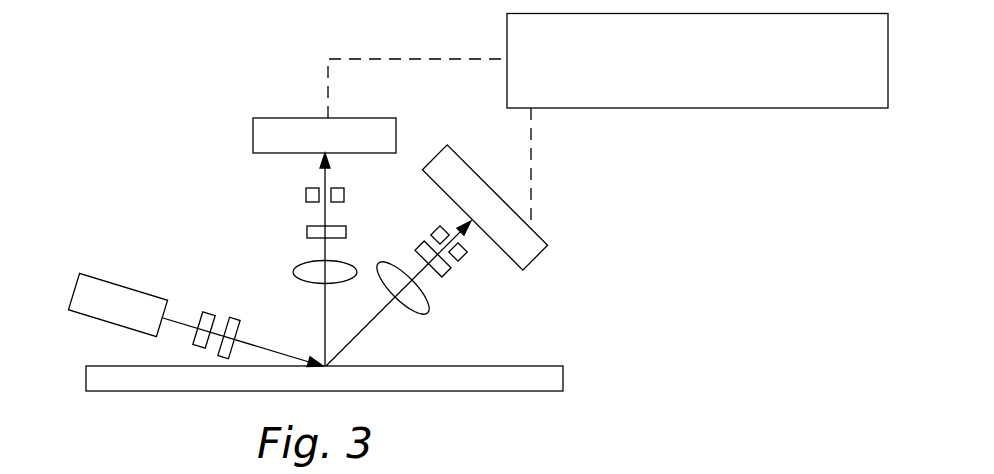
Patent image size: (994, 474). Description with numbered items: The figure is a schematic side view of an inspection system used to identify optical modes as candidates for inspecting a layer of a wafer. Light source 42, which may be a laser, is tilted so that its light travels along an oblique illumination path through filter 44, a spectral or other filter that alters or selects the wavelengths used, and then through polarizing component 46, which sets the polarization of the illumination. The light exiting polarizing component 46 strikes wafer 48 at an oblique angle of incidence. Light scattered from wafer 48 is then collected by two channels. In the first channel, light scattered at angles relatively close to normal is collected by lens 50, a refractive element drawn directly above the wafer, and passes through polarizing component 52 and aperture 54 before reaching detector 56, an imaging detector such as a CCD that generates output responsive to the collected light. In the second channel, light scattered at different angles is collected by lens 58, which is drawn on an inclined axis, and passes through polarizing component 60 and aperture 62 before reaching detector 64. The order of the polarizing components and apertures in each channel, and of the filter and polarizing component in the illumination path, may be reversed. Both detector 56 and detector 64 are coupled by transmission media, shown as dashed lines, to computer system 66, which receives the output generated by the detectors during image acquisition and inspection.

The light source 42 is at (113, 280).
The filter 44 is at (208, 311).
The polarizing component 46 is at (238, 320).
The wafer 48 is at (100, 365).
The lens 50 is at (299, 268).
The polarizing component 52 is at (307, 227).
The aperture 54 is at (306, 192).
The detector 56 is at (252, 138).
The lens 58 is at (423, 312).
The polarizing component 60 is at (442, 277).
The aperture 62 is at (440, 230).
The detector 64 is at (535, 248).
The computer system 66 is at (843, 75).